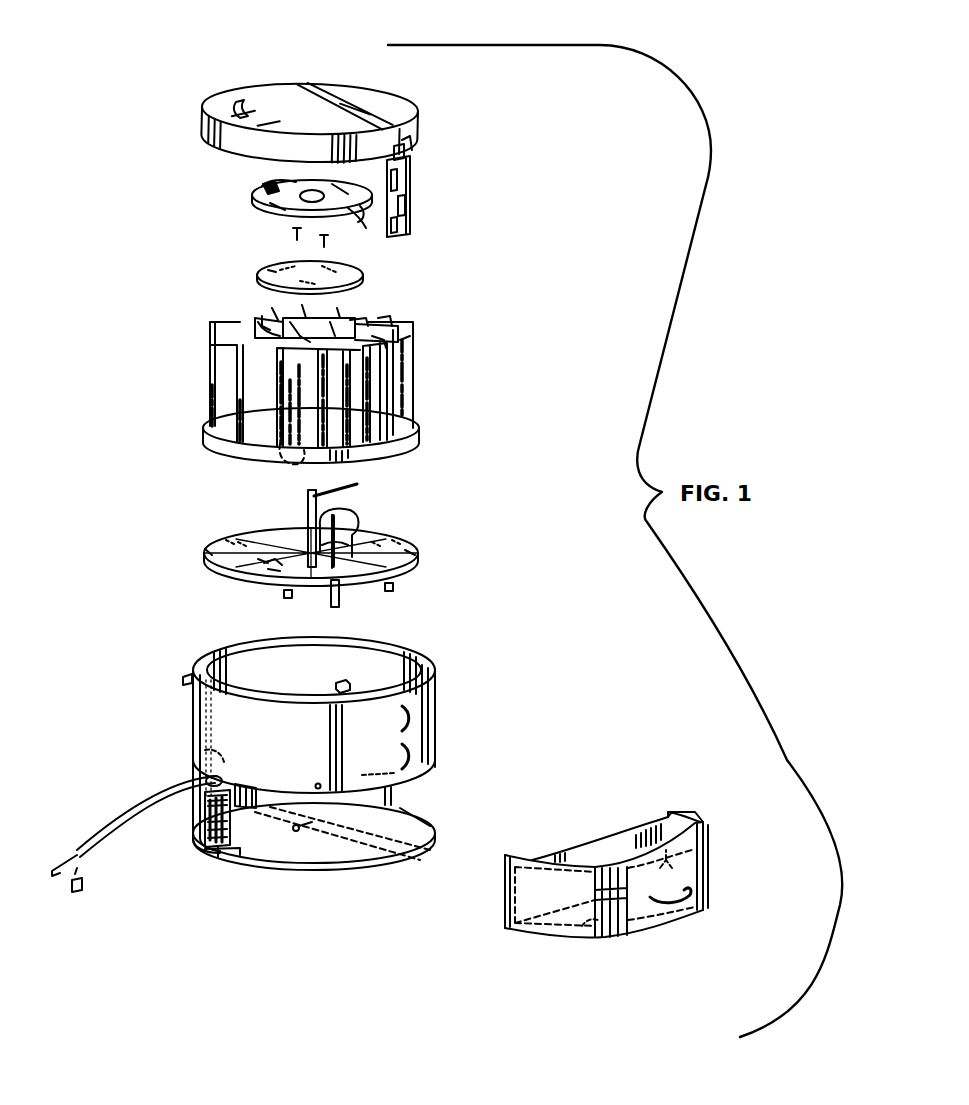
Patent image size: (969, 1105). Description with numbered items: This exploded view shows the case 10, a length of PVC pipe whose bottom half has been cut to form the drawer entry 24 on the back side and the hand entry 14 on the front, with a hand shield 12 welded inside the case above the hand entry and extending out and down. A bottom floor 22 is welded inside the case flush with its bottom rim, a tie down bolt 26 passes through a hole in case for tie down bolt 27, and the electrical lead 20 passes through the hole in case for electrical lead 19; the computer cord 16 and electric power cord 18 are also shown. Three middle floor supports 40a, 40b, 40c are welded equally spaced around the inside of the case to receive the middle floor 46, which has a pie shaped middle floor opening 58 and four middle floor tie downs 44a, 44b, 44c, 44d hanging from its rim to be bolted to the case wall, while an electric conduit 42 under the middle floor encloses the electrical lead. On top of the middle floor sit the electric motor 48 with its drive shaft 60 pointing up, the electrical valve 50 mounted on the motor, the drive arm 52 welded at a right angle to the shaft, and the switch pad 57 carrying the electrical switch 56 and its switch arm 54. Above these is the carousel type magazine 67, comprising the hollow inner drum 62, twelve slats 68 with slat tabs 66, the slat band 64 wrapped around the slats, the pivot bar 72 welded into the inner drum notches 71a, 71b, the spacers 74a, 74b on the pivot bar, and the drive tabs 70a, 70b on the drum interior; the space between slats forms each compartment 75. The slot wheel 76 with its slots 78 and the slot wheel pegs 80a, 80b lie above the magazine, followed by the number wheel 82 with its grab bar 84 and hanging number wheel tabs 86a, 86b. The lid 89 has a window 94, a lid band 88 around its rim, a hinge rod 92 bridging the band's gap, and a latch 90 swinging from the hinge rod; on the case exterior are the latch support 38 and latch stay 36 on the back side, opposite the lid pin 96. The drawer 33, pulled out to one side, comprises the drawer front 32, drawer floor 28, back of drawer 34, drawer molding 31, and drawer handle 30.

The case 10 is at (205, 698).
The hand shield 12 is at (216, 852).
The hand entry 14 is at (243, 812).
The computer cord 16 is at (54, 868).
The electric power cord 18 is at (82, 885).
The hole in case for electrical lead 19 is at (208, 778).
The electrical lead 20 is at (122, 814).
The bottom floor 22 is at (325, 863).
The drawer entry 24 is at (376, 850).
The tie down bolt 26 is at (305, 826).
The hole in case for tie down bolt 27 is at (318, 784).
The drawer floor 28 is at (580, 936).
The drawer handle 30 is at (700, 900).
The drawer molding 31 is at (706, 820).
The drawer front 32 is at (634, 932).
The drawer 33 is at (726, 936).
The back of drawer 34 is at (642, 832).
The latch stay 36 is at (410, 756).
The latch support 38 is at (410, 716).
The middle floor support 40a is at (210, 748).
The middle floor support 40b is at (400, 773).
The middle floor support 40c is at (340, 683).
The electric conduit 42 is at (342, 602).
The middle floor tie down 44a is at (392, 589).
The middle floor tie down 44b is at (400, 539).
The middle floor tie down 44c is at (287, 598).
The middle floor tie down 44d is at (230, 538).
The middle floor 46 is at (395, 568).
The electric motor 48 is at (416, 556).
The electrical valve 50 is at (379, 519).
The drive arm 52 is at (358, 486).
The switch arm 54 is at (270, 568).
The electrical switch 56 is at (272, 573).
The switch pad 57 is at (205, 552).
The middle floor opening 58 is at (262, 563).
The drive shaft 60 is at (307, 505).
The hollow inner drum 62 is at (385, 337).
The slat band 64 is at (418, 438).
The slat tab 66 is at (300, 460).
The magazine 67 is at (526, 381).
The slat 68 is at (215, 385).
The drive tab 70a is at (388, 320).
The drive tab 70b is at (362, 319).
The inner drum notch 71a is at (386, 347).
The inner drum notch 71b is at (250, 320).
The pivot bar 72 is at (245, 360).
The spacer 74a is at (240, 348).
The spacer 74b is at (316, 342).
The compartment 75 is at (405, 395).
The slot wheel 76 is at (350, 268).
The slot 78 is at (270, 268).
The slot wheel peg 80a is at (318, 240).
The slot wheel peg 80b is at (292, 232).
The number wheel 82 is at (350, 216).
The grab bar 84 is at (285, 203).
The number wheel tab 86a is at (374, 215).
The number wheel tab 86b is at (262, 189).
The lid band 88 is at (414, 144).
The lid 89 is at (385, 105).
The latch 90 is at (405, 175).
The hinge rod 92 is at (406, 151).
The window 94 is at (238, 104).
The lid pin 96 is at (190, 677).